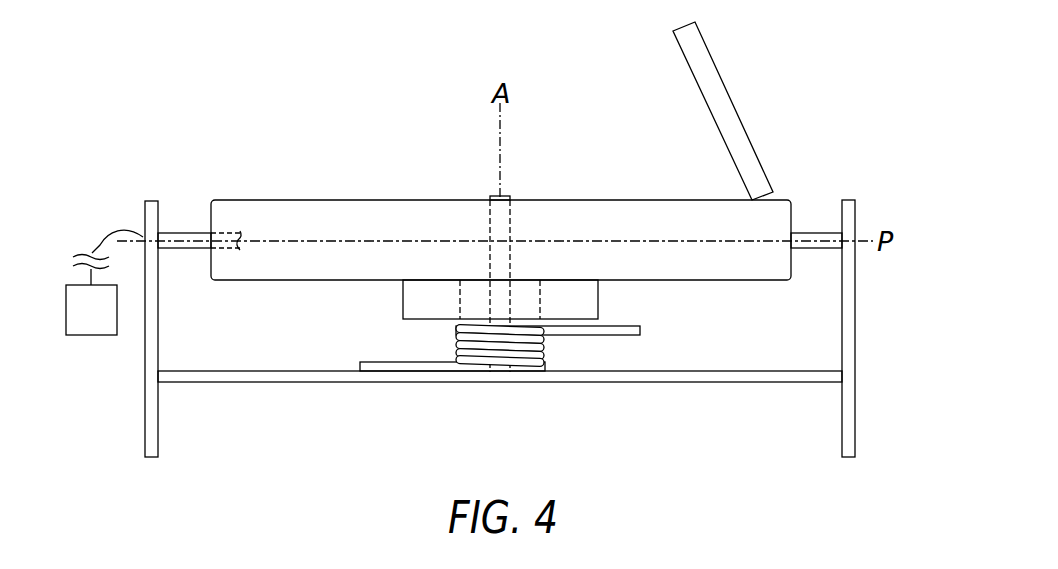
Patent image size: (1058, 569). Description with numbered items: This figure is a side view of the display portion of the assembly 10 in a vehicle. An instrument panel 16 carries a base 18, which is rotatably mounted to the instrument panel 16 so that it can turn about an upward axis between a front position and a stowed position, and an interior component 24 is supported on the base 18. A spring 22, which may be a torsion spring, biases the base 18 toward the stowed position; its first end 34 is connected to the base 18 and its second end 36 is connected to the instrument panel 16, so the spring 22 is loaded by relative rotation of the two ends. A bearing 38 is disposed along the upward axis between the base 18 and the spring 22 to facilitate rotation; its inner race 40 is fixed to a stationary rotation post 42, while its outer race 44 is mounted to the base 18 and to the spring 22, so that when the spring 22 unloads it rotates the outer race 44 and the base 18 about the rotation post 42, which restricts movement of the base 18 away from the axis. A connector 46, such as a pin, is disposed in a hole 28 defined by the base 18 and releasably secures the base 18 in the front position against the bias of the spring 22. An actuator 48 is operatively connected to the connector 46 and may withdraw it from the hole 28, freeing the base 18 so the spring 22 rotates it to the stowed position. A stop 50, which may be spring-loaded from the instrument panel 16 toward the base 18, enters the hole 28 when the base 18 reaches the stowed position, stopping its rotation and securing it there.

The assembly 10 is at (229, 69).
The instrument panel 16 is at (685, 383).
The base 18 is at (628, 212).
The spring 22 is at (545, 349).
The interior component 24 is at (718, 70).
The hole 28 is at (245, 237).
The first end 34 is at (628, 326).
The second end 36 is at (378, 361).
The bearing 38 is at (403, 293).
The inner race 40 is at (512, 301).
The rotation post 42 is at (504, 197).
The outer race 44 is at (541, 306).
The connector 46 is at (190, 232).
The actuator 48 is at (75, 338).
The stop 50 is at (818, 232).